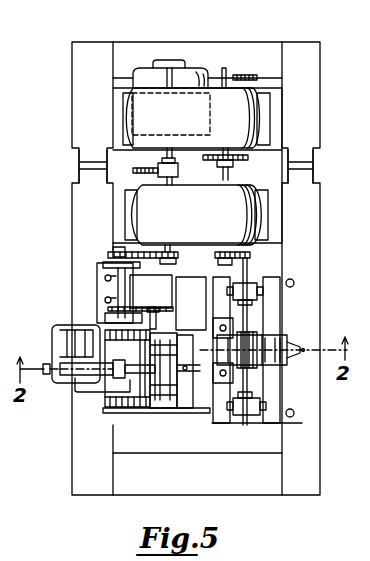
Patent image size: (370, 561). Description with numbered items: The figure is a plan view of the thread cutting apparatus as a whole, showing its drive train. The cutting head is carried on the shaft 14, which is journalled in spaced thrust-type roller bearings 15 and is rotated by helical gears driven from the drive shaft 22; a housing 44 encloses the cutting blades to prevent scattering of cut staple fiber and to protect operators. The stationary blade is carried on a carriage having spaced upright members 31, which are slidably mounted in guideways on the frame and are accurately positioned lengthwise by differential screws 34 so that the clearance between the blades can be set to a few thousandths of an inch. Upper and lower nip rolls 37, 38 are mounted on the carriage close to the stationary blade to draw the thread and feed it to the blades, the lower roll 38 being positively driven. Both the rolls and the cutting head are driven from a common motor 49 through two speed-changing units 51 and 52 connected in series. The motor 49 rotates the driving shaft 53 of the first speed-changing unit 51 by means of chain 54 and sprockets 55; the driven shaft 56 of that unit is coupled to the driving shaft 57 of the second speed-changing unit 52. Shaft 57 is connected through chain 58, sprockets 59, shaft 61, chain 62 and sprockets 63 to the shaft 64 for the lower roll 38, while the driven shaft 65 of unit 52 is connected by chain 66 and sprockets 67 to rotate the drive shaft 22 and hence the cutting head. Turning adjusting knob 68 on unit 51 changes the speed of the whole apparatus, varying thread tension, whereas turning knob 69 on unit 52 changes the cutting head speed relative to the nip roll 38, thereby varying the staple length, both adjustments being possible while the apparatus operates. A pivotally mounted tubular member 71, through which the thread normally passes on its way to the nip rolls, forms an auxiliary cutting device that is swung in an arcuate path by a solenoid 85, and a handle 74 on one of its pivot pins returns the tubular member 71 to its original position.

The shaft 14 is at (300, 350).
The bearings 15 is at (292, 340).
The drive shaft 22 is at (250, 272).
The upright members 31 is at (135, 410).
The differential screws 34 is at (100, 410).
The upper nip roll 37 is at (162, 410).
The lower nip roll 38 is at (145, 412).
The housing 44 is at (205, 412).
The motor 49 is at (150, 67).
The first speed-changing unit 51 is at (222, 100).
The second speed-changing unit 52 is at (193, 198).
The driving shaft 53 is at (225, 155).
The chain 54 is at (199, 174).
The sprockets 55 is at (160, 165).
The driven shaft 56 is at (169, 160).
The driving shaft 57 is at (168, 252).
The chain 58 is at (151, 215).
The sprockets 59 is at (108, 250).
The shaft 61 is at (105, 278).
The chain 62 is at (140, 312).
The sprockets 63 is at (108, 302).
The shaft 64 is at (155, 322).
The driven shaft 65 is at (231, 216).
The chain 66 is at (253, 232).
The sprockets 67 is at (218, 254).
The adjusting knob 68 is at (250, 74).
The knob 69 is at (120, 174).
The tubular member 71 is at (98, 382).
The handle 74 is at (90, 392).
The solenoid 85 is at (67, 337).